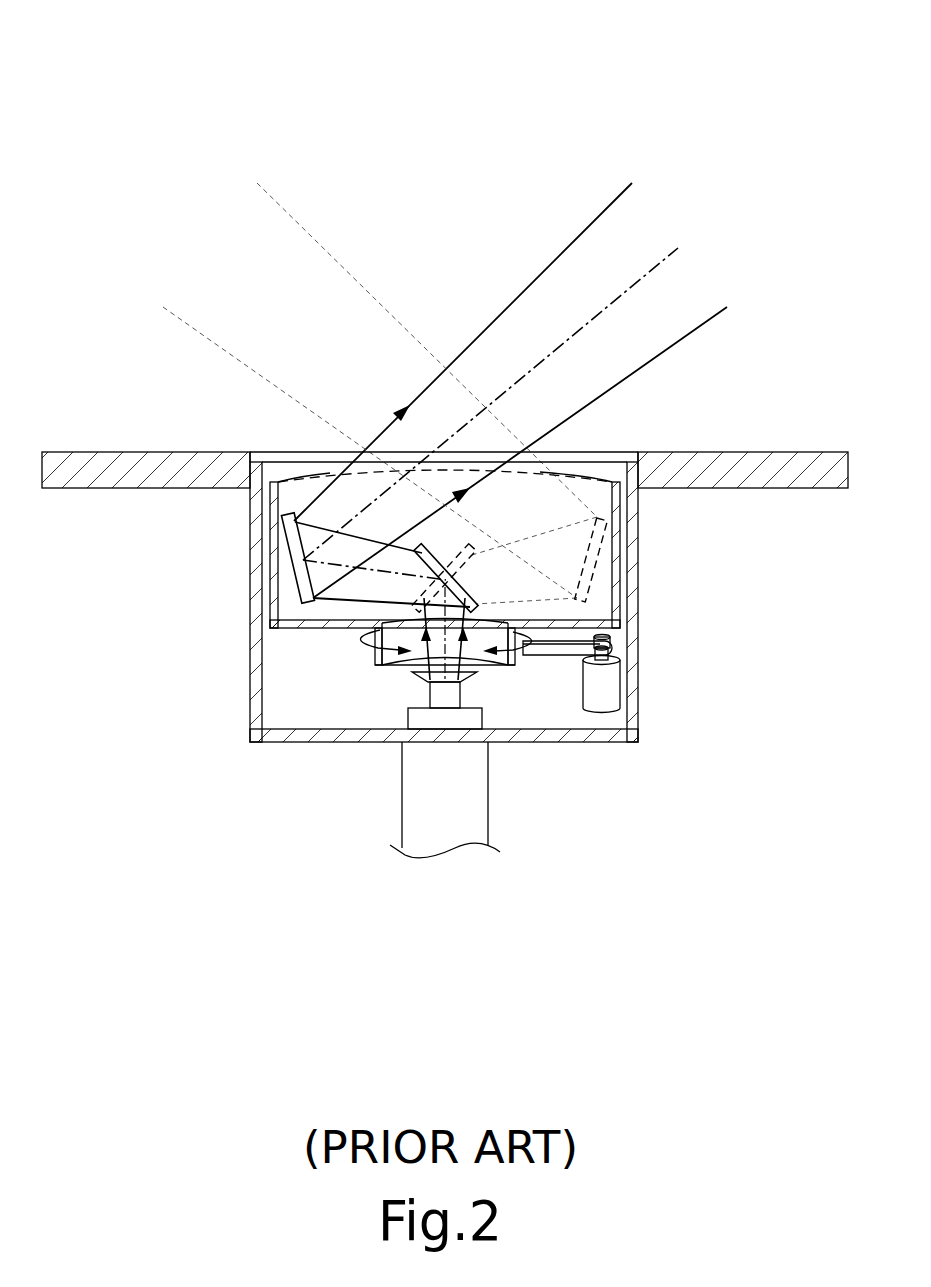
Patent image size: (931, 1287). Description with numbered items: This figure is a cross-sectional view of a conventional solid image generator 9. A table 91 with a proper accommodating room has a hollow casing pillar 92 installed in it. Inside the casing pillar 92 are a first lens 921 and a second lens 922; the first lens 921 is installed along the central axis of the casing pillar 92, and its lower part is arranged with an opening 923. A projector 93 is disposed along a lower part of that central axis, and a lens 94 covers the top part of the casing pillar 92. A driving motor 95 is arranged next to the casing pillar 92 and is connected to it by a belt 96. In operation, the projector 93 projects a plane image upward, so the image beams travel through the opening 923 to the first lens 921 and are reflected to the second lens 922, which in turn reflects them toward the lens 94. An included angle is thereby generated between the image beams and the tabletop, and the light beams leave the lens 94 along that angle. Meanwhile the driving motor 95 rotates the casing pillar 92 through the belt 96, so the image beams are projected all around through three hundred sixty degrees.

The solid image generator 9 is at (262, 108).
The table 91 is at (685, 468).
The casing pillar 92 is at (613, 562).
The projector 93 is at (440, 678).
The lens 94 is at (278, 457).
The driving motor 95 is at (600, 690).
The belt 96 is at (617, 648).
The first lens 921 is at (453, 588).
The second lens 922 is at (293, 558).
The opening 923 is at (477, 652).